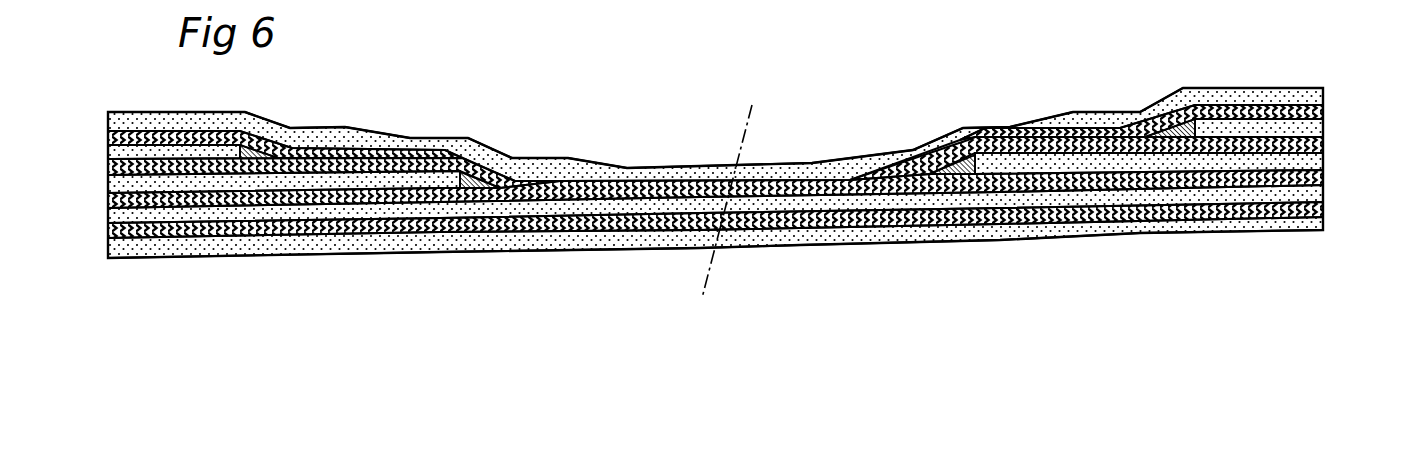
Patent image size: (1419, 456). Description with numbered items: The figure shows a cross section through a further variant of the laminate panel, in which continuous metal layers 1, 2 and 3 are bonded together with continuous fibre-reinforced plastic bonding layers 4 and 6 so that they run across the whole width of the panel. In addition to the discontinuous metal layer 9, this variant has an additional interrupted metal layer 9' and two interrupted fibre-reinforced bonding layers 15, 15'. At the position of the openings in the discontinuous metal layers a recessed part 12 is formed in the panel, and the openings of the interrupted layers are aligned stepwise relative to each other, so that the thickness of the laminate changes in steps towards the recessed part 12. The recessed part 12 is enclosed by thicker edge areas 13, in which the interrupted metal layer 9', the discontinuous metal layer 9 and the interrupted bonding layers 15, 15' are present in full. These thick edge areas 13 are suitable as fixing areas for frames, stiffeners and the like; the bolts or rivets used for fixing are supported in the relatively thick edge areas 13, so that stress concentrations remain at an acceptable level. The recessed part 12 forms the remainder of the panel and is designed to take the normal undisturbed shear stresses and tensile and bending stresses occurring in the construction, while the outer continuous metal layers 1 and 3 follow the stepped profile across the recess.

The continuous metal layer 1 is at (1323, 222).
The continuous metal layer 2 is at (1323, 190).
The continuous metal layer 3 is at (1323, 93).
The fibre-reinforced plastic bonding layer 4 is at (1323, 207).
The fibre-reinforced plastic bonding layer 6 is at (1323, 175).
The discontinuous metal layer 9 is at (748, 163).
The additional interrupted metal layer 9' is at (750, 122).
The interrupted fibre-reinforced bonding layer 15 is at (752, 148).
The interrupted fibre-reinforced bonding layer 15' is at (756, 109).
The recessed part 12 is at (815, 157).
The edge area 13 is at (228, 102).